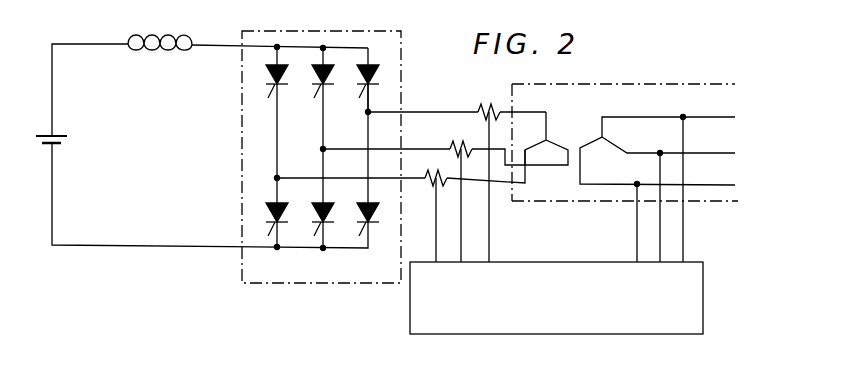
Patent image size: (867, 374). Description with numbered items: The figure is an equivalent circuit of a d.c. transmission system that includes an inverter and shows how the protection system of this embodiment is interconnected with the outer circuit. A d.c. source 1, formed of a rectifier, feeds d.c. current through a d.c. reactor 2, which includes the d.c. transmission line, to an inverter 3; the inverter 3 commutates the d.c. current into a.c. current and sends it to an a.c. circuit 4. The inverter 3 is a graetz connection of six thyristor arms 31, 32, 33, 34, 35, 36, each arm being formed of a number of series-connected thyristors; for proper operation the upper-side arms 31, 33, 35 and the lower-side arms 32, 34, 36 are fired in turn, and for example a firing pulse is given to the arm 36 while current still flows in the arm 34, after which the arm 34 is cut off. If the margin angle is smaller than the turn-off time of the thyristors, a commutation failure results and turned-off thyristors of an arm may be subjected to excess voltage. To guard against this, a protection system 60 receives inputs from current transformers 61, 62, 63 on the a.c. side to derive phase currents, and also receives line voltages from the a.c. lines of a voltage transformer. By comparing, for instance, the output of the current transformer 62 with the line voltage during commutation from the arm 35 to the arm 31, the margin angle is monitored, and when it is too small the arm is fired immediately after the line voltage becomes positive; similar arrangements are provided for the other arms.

The d.c. source 1 is at (62, 140).
The d.c. reactor 2 is at (158, 36).
The inverter 3 is at (402, 60).
The thyristor arm 31 is at (267, 88).
The thyristor arm 32 is at (318, 206).
The thyristor arm 33 is at (355, 90).
The thyristor arm 34 is at (268, 210).
The thyristor arm 35 is at (312, 90).
The thyristor arm 36 is at (372, 226).
The a.c. circuit 4 is at (660, 83).
The protection system 60 is at (580, 262).
The current transformer 61 is at (489, 108).
The current transformer 62 is at (456, 145).
The current transformer 63 is at (438, 175).